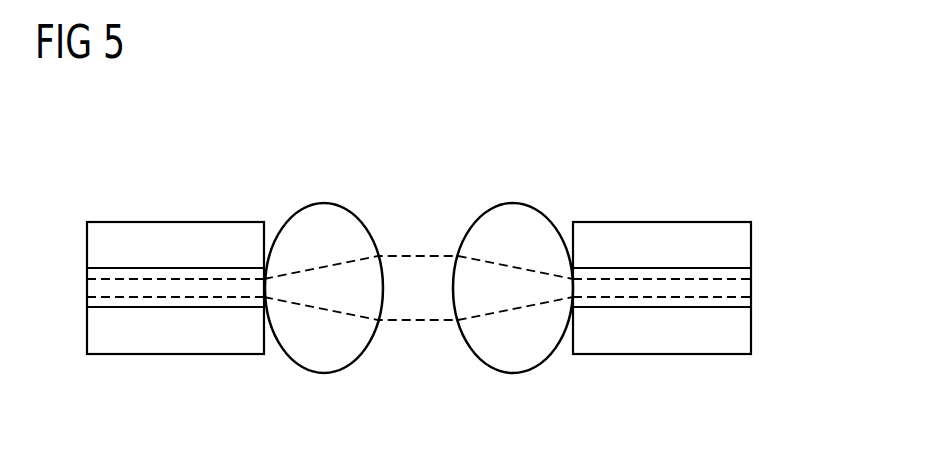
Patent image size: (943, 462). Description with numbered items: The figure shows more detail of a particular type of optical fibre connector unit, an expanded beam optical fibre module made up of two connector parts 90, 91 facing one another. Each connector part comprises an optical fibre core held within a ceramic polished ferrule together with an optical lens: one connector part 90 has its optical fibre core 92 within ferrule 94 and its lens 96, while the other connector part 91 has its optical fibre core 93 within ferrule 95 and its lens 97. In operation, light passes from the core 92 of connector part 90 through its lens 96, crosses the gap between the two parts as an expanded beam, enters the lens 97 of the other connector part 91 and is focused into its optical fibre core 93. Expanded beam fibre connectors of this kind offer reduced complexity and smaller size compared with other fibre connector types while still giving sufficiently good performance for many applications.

The connector part 90 is at (572, 157).
The connector part 91 is at (269, 158).
The optical fibre core 92 is at (630, 304).
The optical fibre core 93 is at (95, 287).
The ceramic polished ferrule 94 is at (740, 334).
The ceramic polished ferrule 95 is at (231, 349).
The optical lens 96 is at (465, 226).
The optical lens 97 is at (372, 226).